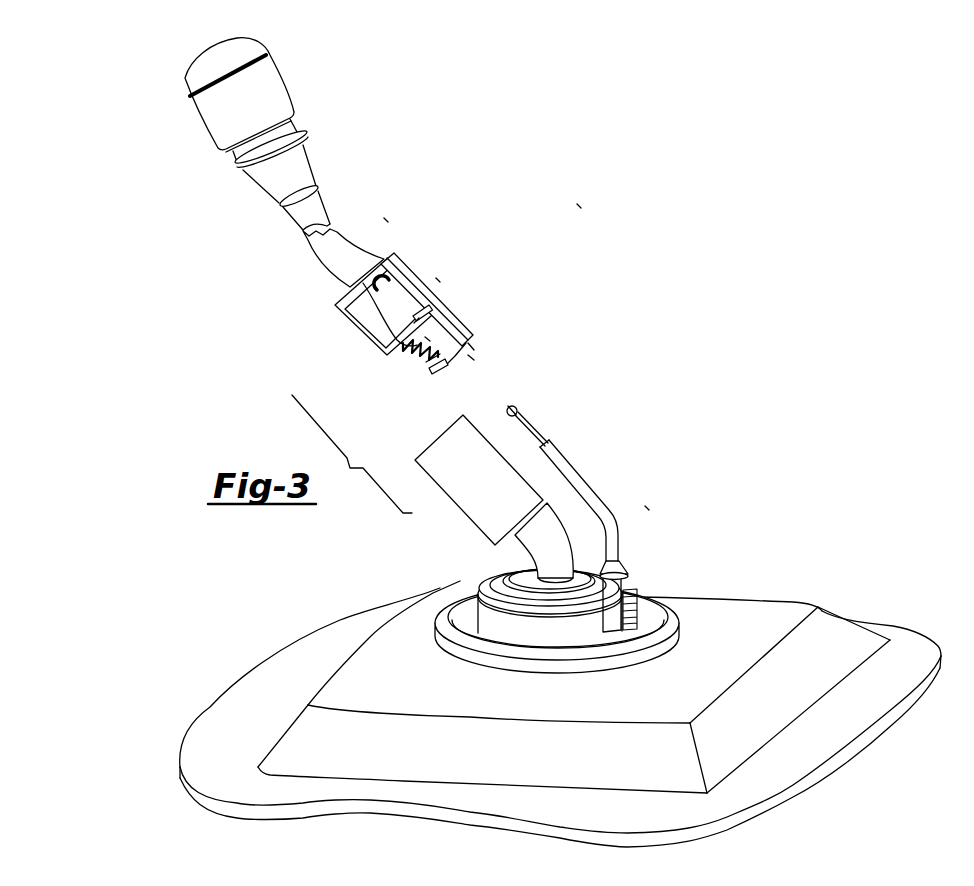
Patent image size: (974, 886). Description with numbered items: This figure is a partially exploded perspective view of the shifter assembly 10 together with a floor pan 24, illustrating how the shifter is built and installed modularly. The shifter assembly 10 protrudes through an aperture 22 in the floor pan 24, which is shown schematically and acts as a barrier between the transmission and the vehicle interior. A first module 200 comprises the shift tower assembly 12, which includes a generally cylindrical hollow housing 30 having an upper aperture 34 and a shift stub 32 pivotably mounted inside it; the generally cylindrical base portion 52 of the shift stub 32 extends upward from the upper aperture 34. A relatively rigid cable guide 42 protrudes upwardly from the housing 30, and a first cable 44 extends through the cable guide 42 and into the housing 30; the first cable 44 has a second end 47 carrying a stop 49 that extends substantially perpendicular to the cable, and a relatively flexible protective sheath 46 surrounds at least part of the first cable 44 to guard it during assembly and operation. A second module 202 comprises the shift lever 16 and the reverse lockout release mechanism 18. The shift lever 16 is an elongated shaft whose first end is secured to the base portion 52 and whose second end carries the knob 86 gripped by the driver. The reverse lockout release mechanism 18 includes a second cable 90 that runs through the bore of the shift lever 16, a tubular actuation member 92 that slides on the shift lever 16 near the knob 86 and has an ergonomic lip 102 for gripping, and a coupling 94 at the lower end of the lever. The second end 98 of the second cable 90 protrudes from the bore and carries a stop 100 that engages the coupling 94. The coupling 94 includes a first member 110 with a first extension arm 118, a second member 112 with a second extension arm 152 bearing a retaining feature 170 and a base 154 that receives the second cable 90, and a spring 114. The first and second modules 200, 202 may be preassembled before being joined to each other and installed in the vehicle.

The shifter assembly 10 is at (578, 203).
The shift tower assembly 12 is at (530, 595).
The shift lever 16 is at (318, 255).
The reverse lockout release mechanism 18 is at (473, 339).
The aperture 22 is at (455, 610).
The floor pan 24 is at (793, 603).
The housing 30 is at (583, 623).
The shift stub 32 is at (551, 536).
The upper aperture 34 is at (521, 579).
The cable guide 42 is at (628, 578).
The first cable 44 is at (538, 434).
The protective sheath 46 is at (567, 462).
The second end 47 is at (518, 410).
The stop 49 is at (509, 408).
The base portion 52 is at (423, 470).
The knob 86 is at (283, 92).
The second cable 90 is at (428, 338).
The actuation member 92 is at (308, 172).
The coupling 94 is at (438, 277).
The second end 98 is at (470, 360).
The stop 100 is at (433, 372).
The lip 102 is at (309, 130).
The first member 110 is at (363, 326).
The second member 112 is at (443, 306).
The spring 114 is at (408, 345).
The first extension arm 118 is at (418, 313).
The second extension arm 152 is at (414, 323).
The base 154 is at (430, 368).
The retaining feature 170 is at (375, 288).
The first module 200 is at (646, 505).
The second module 202 is at (385, 217).